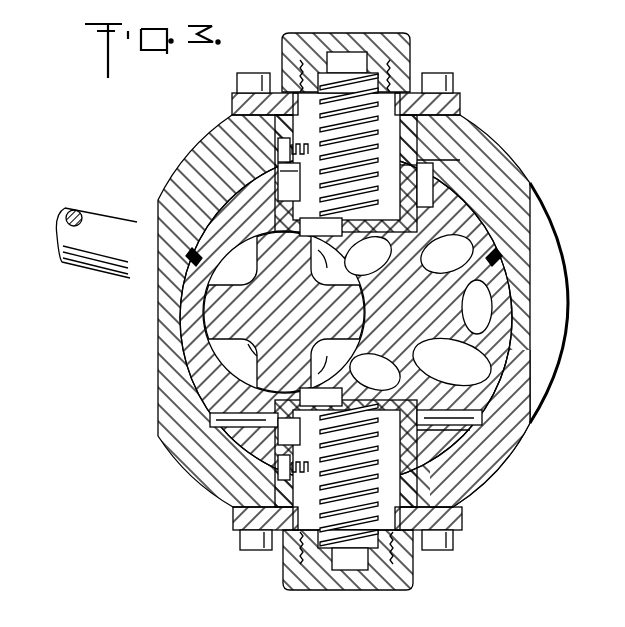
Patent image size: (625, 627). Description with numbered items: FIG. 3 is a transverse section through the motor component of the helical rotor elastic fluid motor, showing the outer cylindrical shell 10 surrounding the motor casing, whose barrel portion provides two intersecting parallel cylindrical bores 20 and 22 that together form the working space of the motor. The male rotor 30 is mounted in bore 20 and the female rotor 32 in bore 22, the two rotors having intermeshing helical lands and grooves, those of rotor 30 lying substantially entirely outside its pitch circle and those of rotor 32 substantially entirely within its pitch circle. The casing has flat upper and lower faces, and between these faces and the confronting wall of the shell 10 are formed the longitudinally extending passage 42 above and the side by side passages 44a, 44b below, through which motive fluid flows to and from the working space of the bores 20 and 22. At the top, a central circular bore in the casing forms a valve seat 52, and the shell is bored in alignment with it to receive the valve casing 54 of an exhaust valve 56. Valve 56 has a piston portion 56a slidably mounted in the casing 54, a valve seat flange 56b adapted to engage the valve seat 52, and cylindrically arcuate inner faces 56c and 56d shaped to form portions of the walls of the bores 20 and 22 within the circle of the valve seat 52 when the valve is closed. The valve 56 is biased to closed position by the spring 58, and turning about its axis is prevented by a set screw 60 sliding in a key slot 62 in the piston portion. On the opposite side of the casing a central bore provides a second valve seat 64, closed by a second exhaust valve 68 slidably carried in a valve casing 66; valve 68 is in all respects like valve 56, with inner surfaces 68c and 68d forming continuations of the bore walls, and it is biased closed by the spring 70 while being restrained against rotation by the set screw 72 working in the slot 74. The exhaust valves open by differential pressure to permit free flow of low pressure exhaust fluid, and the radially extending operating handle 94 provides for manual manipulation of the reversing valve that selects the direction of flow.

The outer cylindrical shell 10 is at (193, 164).
The cylindrical bore 20 is at (284, 312).
The cylindrical bore 22 is at (452, 337).
The rotor 30 is at (237, 356).
The rotor 32 is at (446, 254).
The passage 42 is at (440, 170).
The passage 44a is at (244, 430).
The passage 44b is at (443, 438).
The valve seat 52 is at (418, 205).
The valve casing 54 is at (462, 100).
The exhaust valve 56 is at (384, 148).
The piston portion 56a is at (400, 178).
The valve seat flange 56b is at (434, 190).
The cylindrically arcuate inner face 56c is at (329, 259).
The cylindrically arcuate inner face 56d is at (368, 256).
The spring 58 is at (300, 86).
The set screw 60 is at (280, 150).
The key slot 62 is at (300, 182).
The valve seat 64 is at (449, 416).
The valve casing 66 is at (463, 520).
The exhaust valve 68 is at (450, 470).
The inner surface 68c is at (329, 366).
The inner surface 68d is at (375, 372).
The spring 70 is at (300, 540).
The set screw 72 is at (283, 468).
The slot 74 is at (312, 438).
The operating handle 94 is at (98, 262).